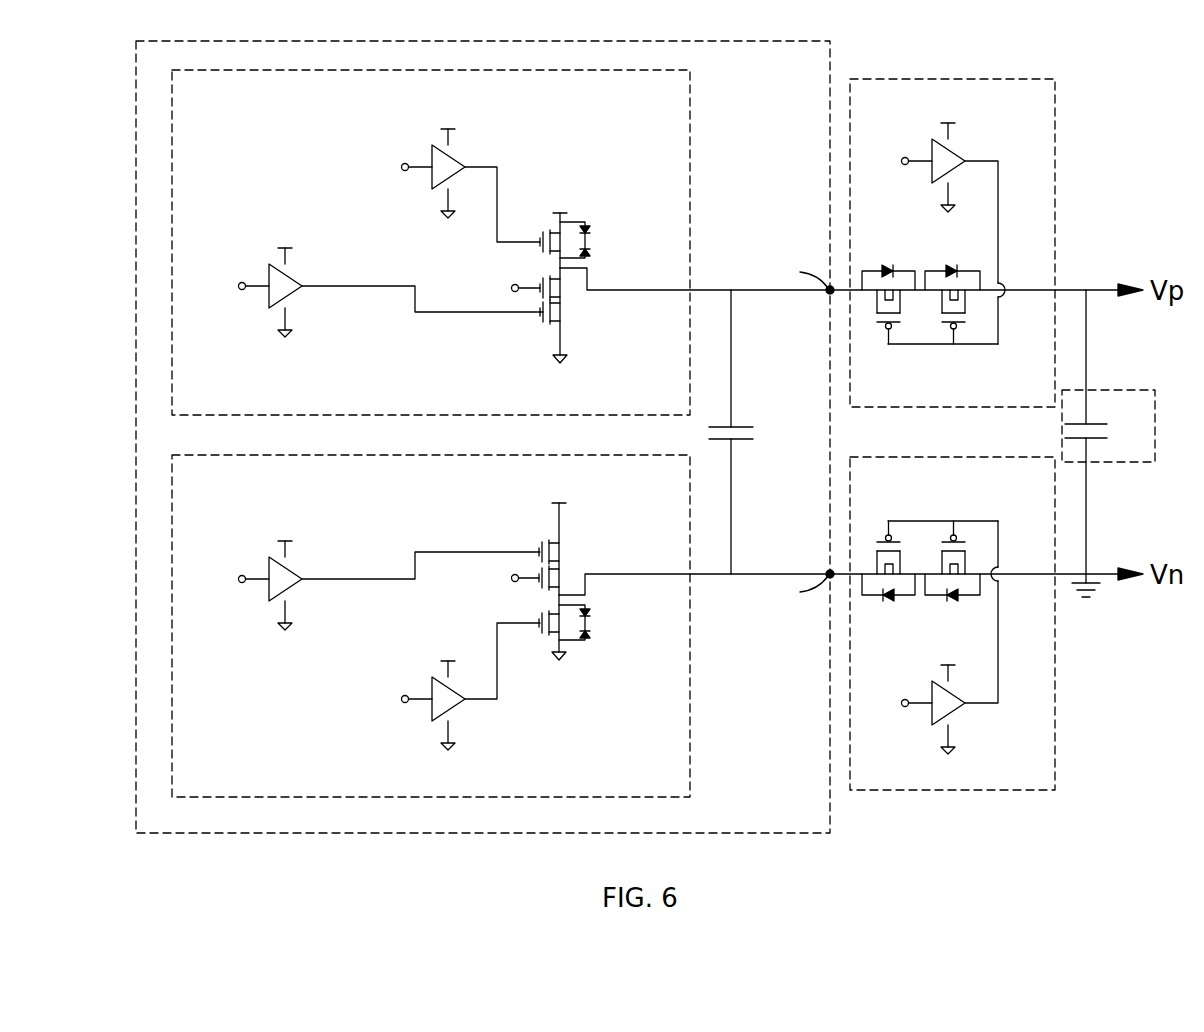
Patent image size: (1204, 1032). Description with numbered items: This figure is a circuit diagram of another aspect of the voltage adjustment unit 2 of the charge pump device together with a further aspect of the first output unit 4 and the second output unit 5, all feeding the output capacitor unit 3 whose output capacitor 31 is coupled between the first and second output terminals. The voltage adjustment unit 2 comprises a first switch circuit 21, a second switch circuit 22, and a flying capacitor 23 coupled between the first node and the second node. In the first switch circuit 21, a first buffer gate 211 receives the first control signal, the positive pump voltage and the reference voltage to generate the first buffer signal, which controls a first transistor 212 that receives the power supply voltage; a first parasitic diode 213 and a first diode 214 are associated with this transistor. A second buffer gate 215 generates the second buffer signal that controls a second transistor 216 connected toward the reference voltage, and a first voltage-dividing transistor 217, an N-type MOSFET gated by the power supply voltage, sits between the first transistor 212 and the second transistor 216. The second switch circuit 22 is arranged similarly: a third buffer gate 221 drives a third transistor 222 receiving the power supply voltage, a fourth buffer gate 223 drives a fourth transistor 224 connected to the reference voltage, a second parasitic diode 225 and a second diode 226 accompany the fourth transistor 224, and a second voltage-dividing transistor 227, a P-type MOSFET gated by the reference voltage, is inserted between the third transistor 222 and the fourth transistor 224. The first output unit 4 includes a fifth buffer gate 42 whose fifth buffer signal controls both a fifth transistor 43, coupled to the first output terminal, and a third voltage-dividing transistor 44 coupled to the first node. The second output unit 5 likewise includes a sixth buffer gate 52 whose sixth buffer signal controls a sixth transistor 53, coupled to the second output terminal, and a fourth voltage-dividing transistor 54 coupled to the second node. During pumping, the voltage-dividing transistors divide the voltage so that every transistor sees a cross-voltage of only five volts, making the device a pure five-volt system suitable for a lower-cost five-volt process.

The voltage adjustment unit 2 is at (832, 66).
The first switch circuit 21 is at (696, 152).
The second switch circuit 22 is at (696, 745).
The flying capacitor 23 is at (745, 426).
The first buffer gate 211 is at (432, 180).
The first transistor 212 is at (600, 219).
The first parasitic diode 213 is at (591, 250).
The first diode 214 is at (591, 234).
The second buffer gate 215 is at (306, 267).
The second transistor 216 is at (535, 338).
The first voltage-dividing transistor 217 is at (570, 300).
The third buffer gate 221 is at (298, 588).
The third transistor 222 is at (540, 532).
The fourth buffer gate 223 is at (430, 710).
The fourth transistor 224 is at (600, 641).
The second parasitic diode 225 is at (591, 615).
The second diode 226 is at (591, 633).
The second voltage-dividing transistor 227 is at (570, 578).
The output capacitor unit 3 is at (1157, 419).
The output capacitor 31 is at (1097, 424).
The first output unit 4 is at (1057, 206).
The fifth buffer gate 42 is at (958, 157).
The fifth transistor 43 is at (978, 322).
The third voltage-dividing transistor 44 is at (912, 322).
The second output unit 5 is at (1057, 658).
The sixth buffer gate 52 is at (958, 712).
The sixth transistor 53 is at (980, 540).
The fourth voltage-dividing transistor 54 is at (915, 540).